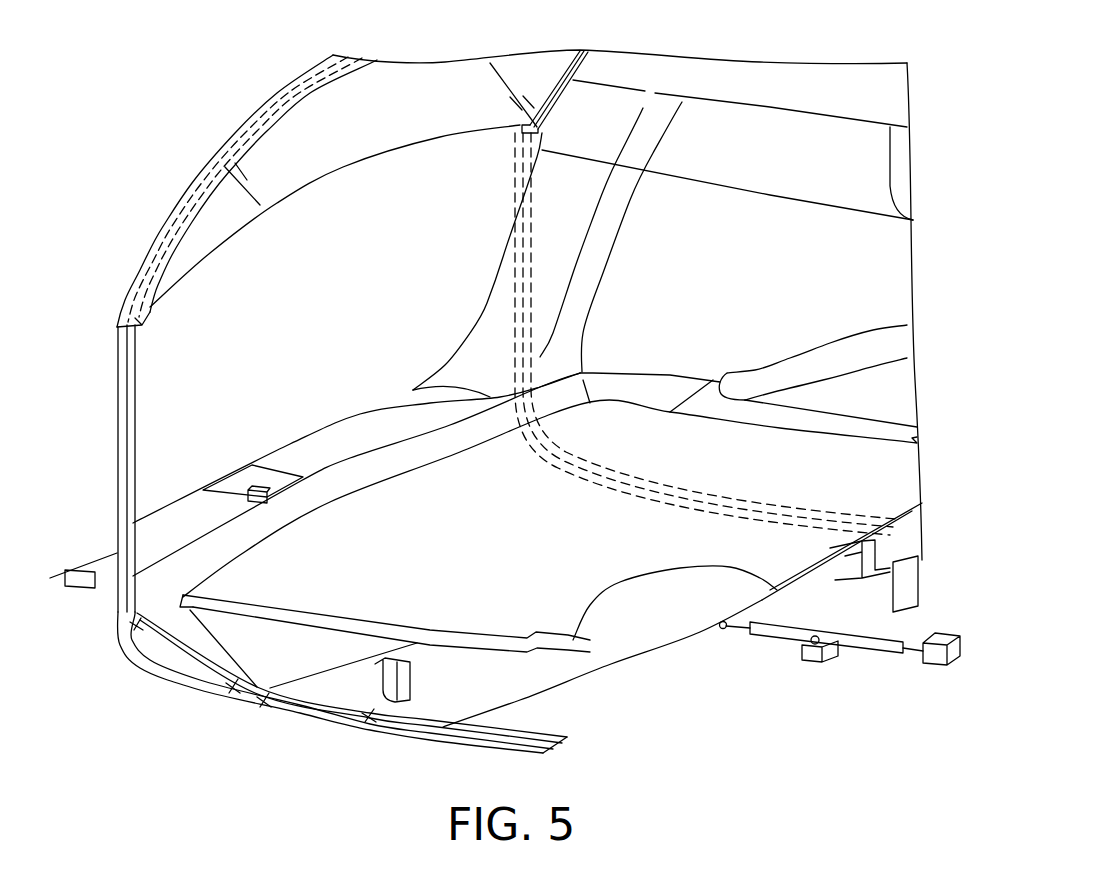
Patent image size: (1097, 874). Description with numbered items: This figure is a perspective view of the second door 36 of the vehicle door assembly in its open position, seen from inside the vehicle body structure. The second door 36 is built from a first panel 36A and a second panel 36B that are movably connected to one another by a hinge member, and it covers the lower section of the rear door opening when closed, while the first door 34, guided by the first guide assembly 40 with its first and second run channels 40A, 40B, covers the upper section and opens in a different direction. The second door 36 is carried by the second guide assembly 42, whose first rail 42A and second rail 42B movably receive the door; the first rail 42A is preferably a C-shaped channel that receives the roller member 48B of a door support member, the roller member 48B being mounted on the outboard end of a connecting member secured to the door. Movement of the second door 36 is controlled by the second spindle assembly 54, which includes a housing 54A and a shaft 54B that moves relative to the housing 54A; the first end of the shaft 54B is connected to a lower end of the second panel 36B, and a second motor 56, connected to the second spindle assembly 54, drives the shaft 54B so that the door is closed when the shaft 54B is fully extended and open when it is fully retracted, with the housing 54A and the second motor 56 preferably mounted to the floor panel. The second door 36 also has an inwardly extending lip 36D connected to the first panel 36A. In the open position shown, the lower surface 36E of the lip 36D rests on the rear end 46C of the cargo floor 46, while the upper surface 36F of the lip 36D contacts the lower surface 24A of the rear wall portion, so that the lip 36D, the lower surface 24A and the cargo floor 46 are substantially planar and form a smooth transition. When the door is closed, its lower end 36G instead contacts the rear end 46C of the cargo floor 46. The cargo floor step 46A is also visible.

The lower surface of the rear wall portion 24A is at (297, 457).
The first door 34 is at (407, 108).
The second door 36 is at (577, 683).
The first panel 36A is at (248, 648).
The second panel 36B is at (350, 687).
The lip 36D is at (193, 563).
The lower surface 36E is at (457, 447).
The upper surface 36F is at (403, 432).
The lower end 36G is at (537, 667).
The first guide assembly 40 is at (227, 188).
The first run channel 40A is at (583, 67).
The second run channel 40B is at (175, 187).
The second guide assembly 42 is at (118, 407).
The first rail 42A is at (603, 483).
The second rail 42B is at (183, 677).
The cargo floor 46 is at (637, 580).
The front floor step 46A is at (497, 580).
The rear end of the cargo floor 46C is at (370, 480).
The roller member 48B is at (267, 710).
The second spindle assembly 54 is at (817, 677).
The housing 54A is at (783, 648).
The shaft 54B is at (725, 632).
The second motor 56 is at (933, 663).